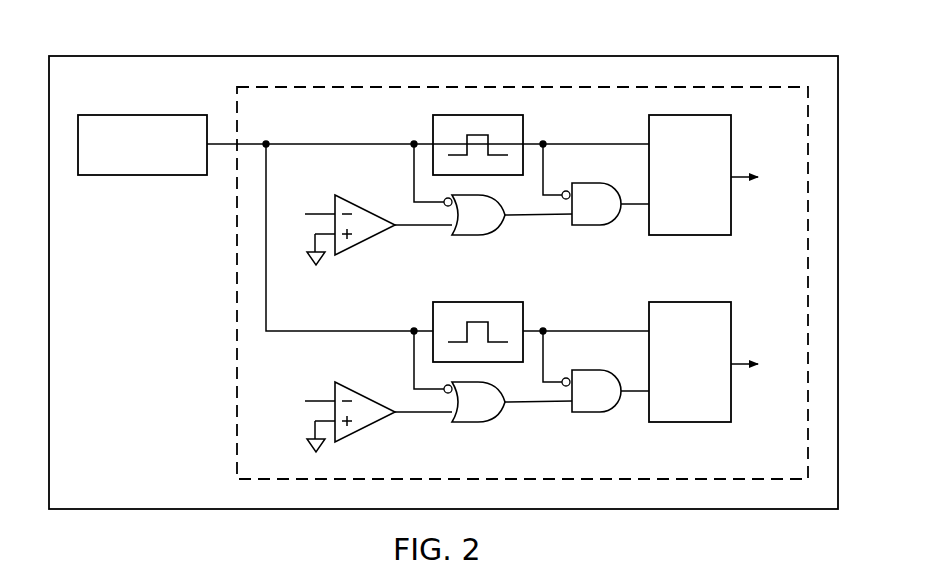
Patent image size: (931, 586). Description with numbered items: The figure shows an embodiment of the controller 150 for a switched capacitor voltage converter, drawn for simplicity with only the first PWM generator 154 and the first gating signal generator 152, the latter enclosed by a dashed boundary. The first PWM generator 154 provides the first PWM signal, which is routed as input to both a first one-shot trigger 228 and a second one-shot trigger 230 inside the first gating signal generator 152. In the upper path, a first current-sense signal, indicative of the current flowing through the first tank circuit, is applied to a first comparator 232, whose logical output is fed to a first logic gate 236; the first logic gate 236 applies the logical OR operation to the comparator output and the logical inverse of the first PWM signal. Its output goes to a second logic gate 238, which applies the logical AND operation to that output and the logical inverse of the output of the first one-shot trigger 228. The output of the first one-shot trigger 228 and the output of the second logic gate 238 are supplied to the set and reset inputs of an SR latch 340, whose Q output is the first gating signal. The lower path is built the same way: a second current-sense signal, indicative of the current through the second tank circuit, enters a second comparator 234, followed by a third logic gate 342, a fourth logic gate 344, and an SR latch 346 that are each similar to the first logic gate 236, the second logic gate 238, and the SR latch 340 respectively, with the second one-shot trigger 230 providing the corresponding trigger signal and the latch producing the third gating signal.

The controller 150 is at (308, 52).
The first gating signal generator 152 is at (234, 284).
The first PWM generator 154 is at (143, 113).
The first one-shot trigger 228 is at (432, 129).
The second one-shot trigger 230 is at (432, 315).
The first comparator 232 is at (363, 242).
The second comparator 234 is at (363, 429).
The first logic gate 236 is at (482, 236).
The second logic gate 238 is at (597, 227).
The SR latch 340 is at (688, 236).
The third logic gate 342 is at (482, 423).
The fourth logic gate 344 is at (597, 414).
The SR latch 346 is at (688, 423).